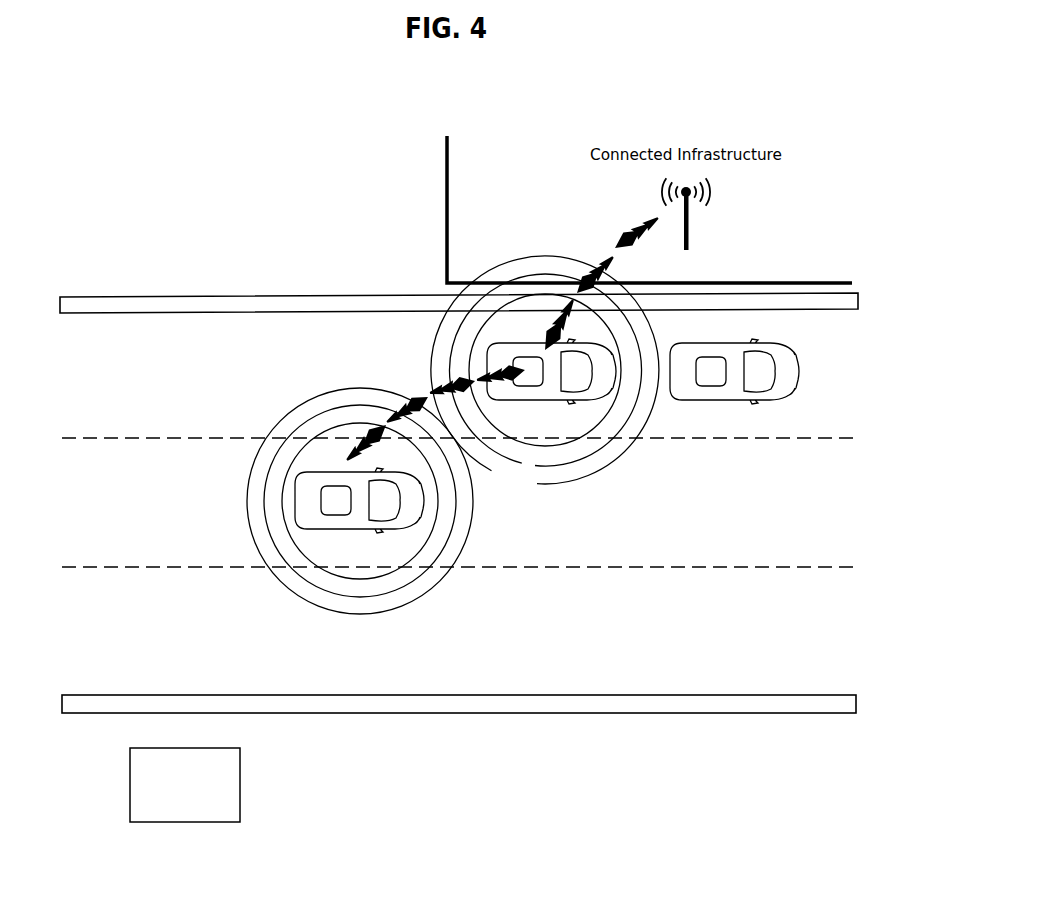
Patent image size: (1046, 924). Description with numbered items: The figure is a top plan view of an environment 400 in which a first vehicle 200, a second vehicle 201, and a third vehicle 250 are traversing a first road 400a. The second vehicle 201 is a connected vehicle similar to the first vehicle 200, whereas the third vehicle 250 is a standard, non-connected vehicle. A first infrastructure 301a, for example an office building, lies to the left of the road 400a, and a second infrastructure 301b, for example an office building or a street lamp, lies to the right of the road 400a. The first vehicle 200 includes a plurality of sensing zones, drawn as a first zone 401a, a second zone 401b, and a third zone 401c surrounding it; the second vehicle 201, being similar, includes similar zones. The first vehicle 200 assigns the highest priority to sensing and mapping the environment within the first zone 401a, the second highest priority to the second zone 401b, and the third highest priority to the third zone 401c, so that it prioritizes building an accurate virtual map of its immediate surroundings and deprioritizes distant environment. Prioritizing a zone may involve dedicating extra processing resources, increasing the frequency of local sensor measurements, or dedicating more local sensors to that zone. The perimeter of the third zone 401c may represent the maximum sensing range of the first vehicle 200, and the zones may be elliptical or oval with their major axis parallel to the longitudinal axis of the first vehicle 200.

The environment 400 is at (780, 108).
The first road 400a is at (108, 296).
The first infrastructure 301a is at (445, 218).
The second infrastructure 301b is at (130, 775).
The first vehicle 200 is at (617, 370).
The second vehicle 201 is at (328, 471).
The third vehicle 250 is at (802, 370).
The first zone 401a is at (557, 446).
The second zone 401b is at (608, 447).
The third zone 401c is at (588, 475).